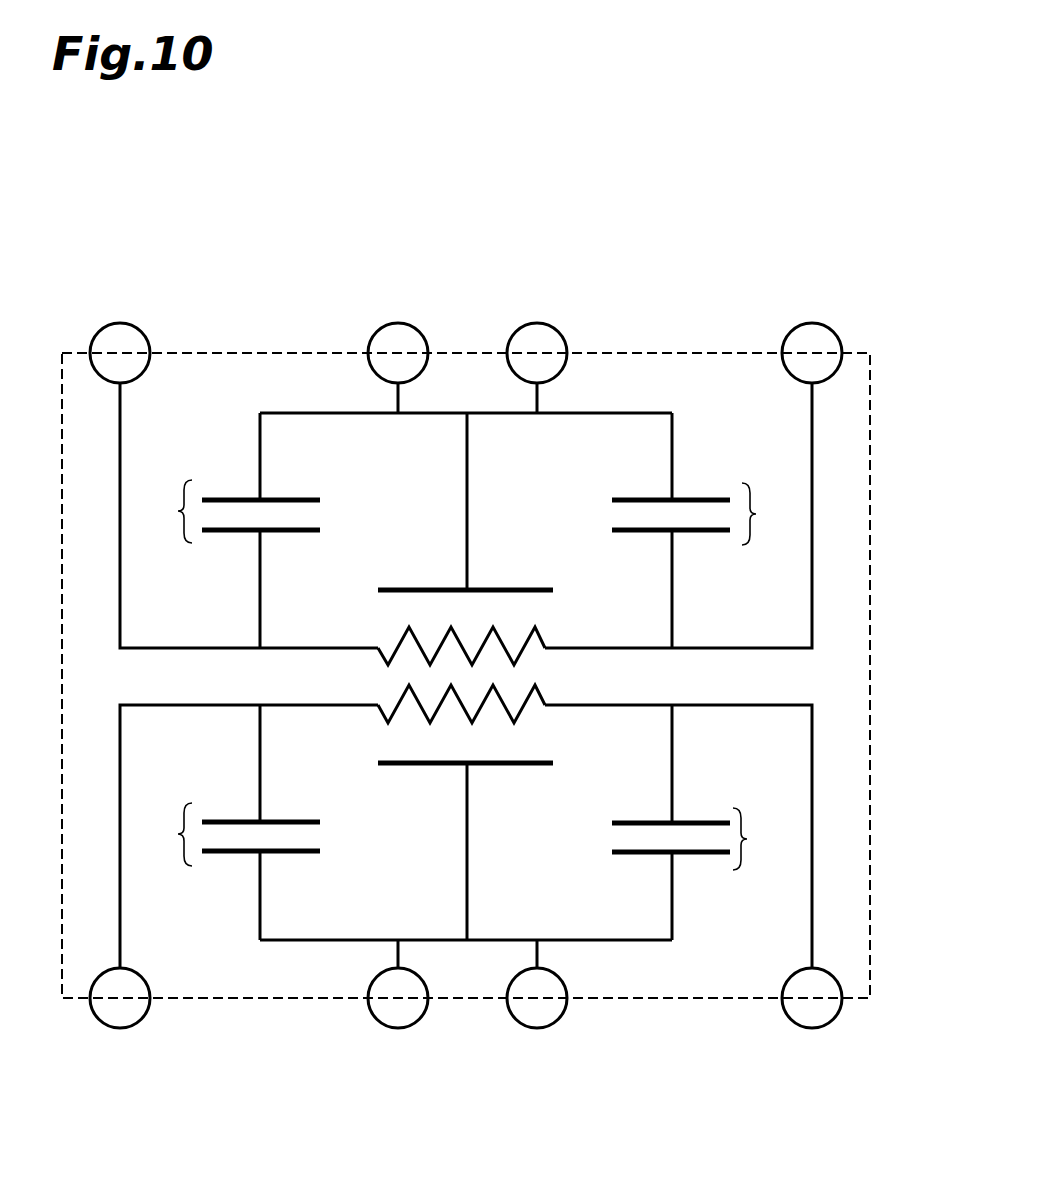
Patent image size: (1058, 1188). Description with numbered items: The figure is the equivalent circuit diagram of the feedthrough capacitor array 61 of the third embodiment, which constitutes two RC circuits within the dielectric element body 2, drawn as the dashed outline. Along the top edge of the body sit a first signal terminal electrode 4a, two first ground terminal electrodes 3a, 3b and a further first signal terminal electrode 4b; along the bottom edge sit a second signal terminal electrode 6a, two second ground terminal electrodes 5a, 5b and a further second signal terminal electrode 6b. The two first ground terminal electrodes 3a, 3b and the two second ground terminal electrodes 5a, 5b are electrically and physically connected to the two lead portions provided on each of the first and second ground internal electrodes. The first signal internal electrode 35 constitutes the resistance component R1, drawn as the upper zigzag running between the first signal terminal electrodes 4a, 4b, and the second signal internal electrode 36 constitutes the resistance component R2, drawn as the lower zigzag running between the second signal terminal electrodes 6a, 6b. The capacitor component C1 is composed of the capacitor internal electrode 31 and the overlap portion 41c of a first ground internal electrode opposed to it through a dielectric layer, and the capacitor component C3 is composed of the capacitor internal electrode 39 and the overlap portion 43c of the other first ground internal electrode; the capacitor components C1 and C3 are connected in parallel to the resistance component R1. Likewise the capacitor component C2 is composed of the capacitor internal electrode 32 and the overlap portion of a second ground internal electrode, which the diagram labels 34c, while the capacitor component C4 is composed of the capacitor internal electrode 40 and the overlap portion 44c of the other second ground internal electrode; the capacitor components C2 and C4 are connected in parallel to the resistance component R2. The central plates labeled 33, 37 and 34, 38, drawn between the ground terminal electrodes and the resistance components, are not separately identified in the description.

The feedthrough capacitor array 61 is at (812, 136).
The dielectric element body 2 is at (871, 412).
The first ground terminal electrode 3a is at (398, 323).
The first ground terminal electrode 3b is at (537, 323).
The first signal terminal electrode 4a is at (120, 323).
The first signal terminal electrode 4b is at (812, 323).
The second ground terminal electrode 5a is at (386, 1028).
The second ground terminal electrode 5b is at (532, 1028).
The second signal terminal electrode 6a is at (116, 1028).
The second signal terminal electrode 6b is at (804, 1028).
The capacitor internal electrode 31 is at (236, 534).
The capacitor internal electrode 32 is at (236, 820).
The capacitor electrode 33 is at (472, 547).
The capacitor electrode 34 is at (455, 806).
The first signal internal electrode 35 is at (545, 640).
The second signal internal electrode 36 is at (545, 702).
The capacitor electrode 37 is at (503, 588).
The capacitor electrode 38 is at (400, 766).
The capacitor internal electrode 39 is at (702, 534).
The capacitor internal electrode 40 is at (698, 821).
The overlap portion 41c is at (236, 497).
The overlap portion 43c is at (702, 498).
The lead-out portion 34c is at (236, 854).
The overlap portion 44c is at (698, 855).
The capacitor component C1 is at (226, 516).
The capacitor component C2 is at (226, 838).
The capacitor component C3 is at (706, 519).
The capacitor component C4 is at (703, 838).
The resistance component R1 is at (490, 615).
The resistance component R2 is at (490, 727).